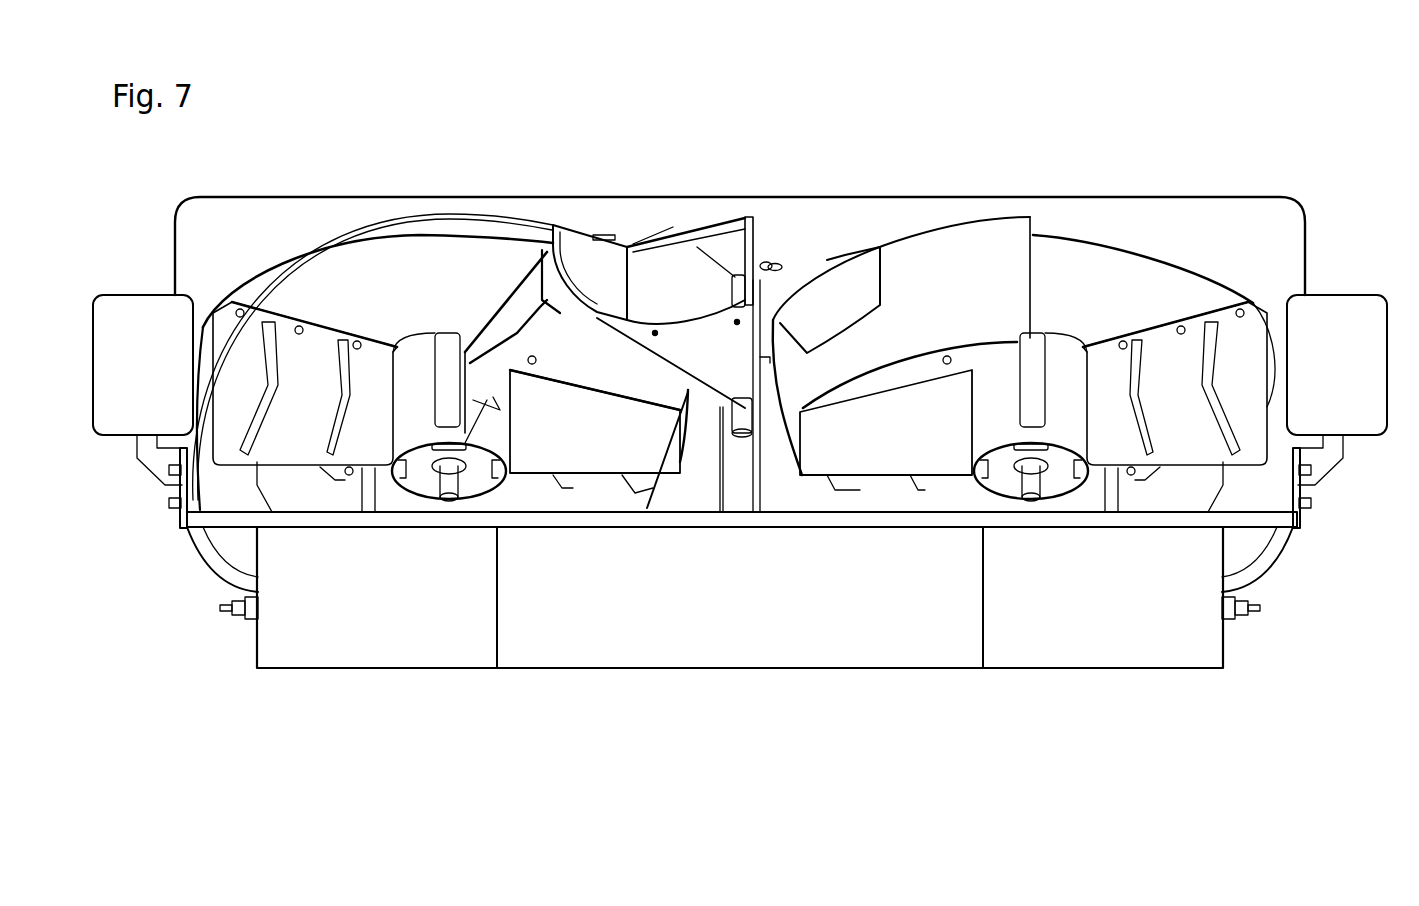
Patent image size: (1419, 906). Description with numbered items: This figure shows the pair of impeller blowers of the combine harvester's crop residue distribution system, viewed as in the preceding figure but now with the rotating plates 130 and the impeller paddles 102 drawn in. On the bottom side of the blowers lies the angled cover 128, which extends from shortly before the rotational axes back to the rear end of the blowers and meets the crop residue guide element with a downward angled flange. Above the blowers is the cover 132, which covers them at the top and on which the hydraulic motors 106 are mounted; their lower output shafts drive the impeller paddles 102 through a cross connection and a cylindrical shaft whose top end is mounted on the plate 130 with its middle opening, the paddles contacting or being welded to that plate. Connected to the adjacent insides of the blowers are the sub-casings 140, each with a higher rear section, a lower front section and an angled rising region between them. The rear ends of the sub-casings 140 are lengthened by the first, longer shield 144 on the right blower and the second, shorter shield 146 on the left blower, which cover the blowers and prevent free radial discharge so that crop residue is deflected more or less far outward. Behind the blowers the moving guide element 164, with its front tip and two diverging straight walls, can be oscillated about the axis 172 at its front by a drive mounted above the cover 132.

The impeller paddles 102 is at (297, 417).
The hydraulic motors 106 is at (497, 498).
The angled cover 128 is at (858, 630).
The plate 130 is at (385, 280).
The cover 132 is at (1101, 197).
The sub-casings 140 is at (620, 322).
The first shield 144 is at (985, 257).
The second shield 146 is at (608, 265).
The moving guide element 164 is at (770, 238).
The axis 172 is at (740, 437).